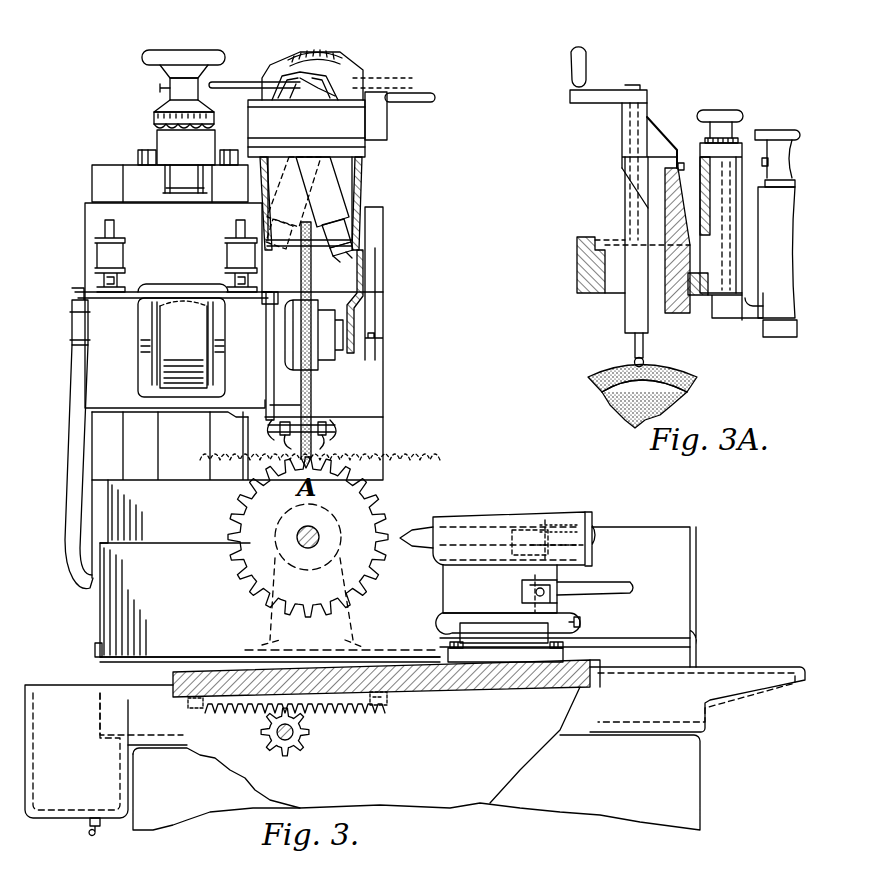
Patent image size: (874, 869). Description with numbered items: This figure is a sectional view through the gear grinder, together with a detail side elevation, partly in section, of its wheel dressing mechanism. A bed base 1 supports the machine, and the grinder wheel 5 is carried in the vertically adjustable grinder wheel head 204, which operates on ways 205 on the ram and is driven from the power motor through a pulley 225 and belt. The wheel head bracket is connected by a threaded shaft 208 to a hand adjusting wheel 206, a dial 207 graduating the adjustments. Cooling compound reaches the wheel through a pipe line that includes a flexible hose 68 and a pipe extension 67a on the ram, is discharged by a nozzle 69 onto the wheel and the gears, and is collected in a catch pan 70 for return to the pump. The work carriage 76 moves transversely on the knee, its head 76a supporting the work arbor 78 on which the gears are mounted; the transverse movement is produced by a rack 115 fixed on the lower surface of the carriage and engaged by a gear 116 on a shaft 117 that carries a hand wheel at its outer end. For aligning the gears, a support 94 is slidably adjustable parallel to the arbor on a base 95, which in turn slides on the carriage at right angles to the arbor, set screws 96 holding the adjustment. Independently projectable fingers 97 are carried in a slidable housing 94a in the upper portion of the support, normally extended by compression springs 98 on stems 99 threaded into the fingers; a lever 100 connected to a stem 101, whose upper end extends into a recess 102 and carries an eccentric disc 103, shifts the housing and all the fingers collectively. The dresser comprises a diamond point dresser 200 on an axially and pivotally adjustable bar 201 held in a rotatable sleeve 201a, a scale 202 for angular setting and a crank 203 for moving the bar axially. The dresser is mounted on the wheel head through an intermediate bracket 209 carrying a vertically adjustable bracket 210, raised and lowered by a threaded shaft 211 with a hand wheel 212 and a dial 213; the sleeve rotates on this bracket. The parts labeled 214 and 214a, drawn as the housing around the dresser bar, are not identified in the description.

In FIG. 3, the bed base 1 is at (414, 758).
In FIG. 3, the grinder wheel 5 is at (311, 276).
In FIG. 3A, the grinder wheel 5 is at (690, 400).
In FIG. 3, the pipe extension 67a is at (268, 350).
In FIG. 3, the flexible hose 68 is at (67, 445).
In FIG. 3, the nozzle 69 is at (332, 444).
In FIG. 3, the catch pan 70 is at (415, 748).
In FIG. 3, the work carriage 76 is at (212, 675).
In FIG. 3, the head 76a is at (356, 624).
In FIG. 3, the work arbor 78 is at (320, 535).
In FIG. 3, the support 94 is at (500, 589).
In FIG. 3, the slidable housing 94a is at (440, 522).
In FIG. 3, the base 95 is at (505, 653).
In FIG. 3, the set screws 96 is at (582, 623).
In FIG. 3, the fingers 97 is at (415, 524).
In FIG. 3, the compression springs 98 is at (548, 520).
In FIG. 3, the stems 99 is at (588, 512).
In FIG. 3, the lever 100 is at (630, 587).
In FIG. 3, the stem 101 is at (562, 582).
In FIG. 3, the recess 102 is at (516, 545).
In FIG. 3, the eccentric disc 103 is at (587, 550).
In FIG. 3, the rack 115 is at (388, 700).
In FIG. 3, the gear 116 is at (310, 746).
In FIG. 3, the shaft 117 is at (277, 735).
In FIG. 3, the diamond point dresser 200 is at (345, 232).
In FIG. 3A, the diamond point dresser 200 is at (632, 360).
In FIG. 3, the bar 201 is at (330, 205).
In FIG. 3A, the bar 201 is at (628, 307).
In FIG. 3, the rotatable sleeve 201a is at (365, 127).
In FIG. 3A, the rotatable sleeve 201a is at (668, 218).
In FIG. 3, the scale 202 is at (352, 82).
In FIG. 3A, the crank 203 is at (600, 92).
In FIG. 3, the grinder wheel head 204 is at (229, 341).
In FIG. 3A, the grinder wheel head 204 is at (783, 334).
In FIG. 3, the ways 205 is at (232, 190).
In FIG. 3, the hand adjusting wheel 206 is at (163, 60).
In FIG. 3, the dial 207 is at (152, 106).
In FIG. 3, the threaded shaft 208 is at (178, 180).
In FIG. 3A, the intermediate bracket 209 is at (742, 322).
In FIG. 3A, the vertically adjustable bracket 210 is at (707, 300).
In FIG. 3A, the threaded shaft 211 is at (732, 274).
In FIG. 3A, the hand wheel 212 is at (742, 94).
In FIG. 3A, the dial 213 is at (738, 140).
In FIG. 3, the housing 214 is at (360, 170).
In FIG. 3, the housing wall 214a is at (362, 287).
In FIG. 3, the pulley 225 is at (181, 347).